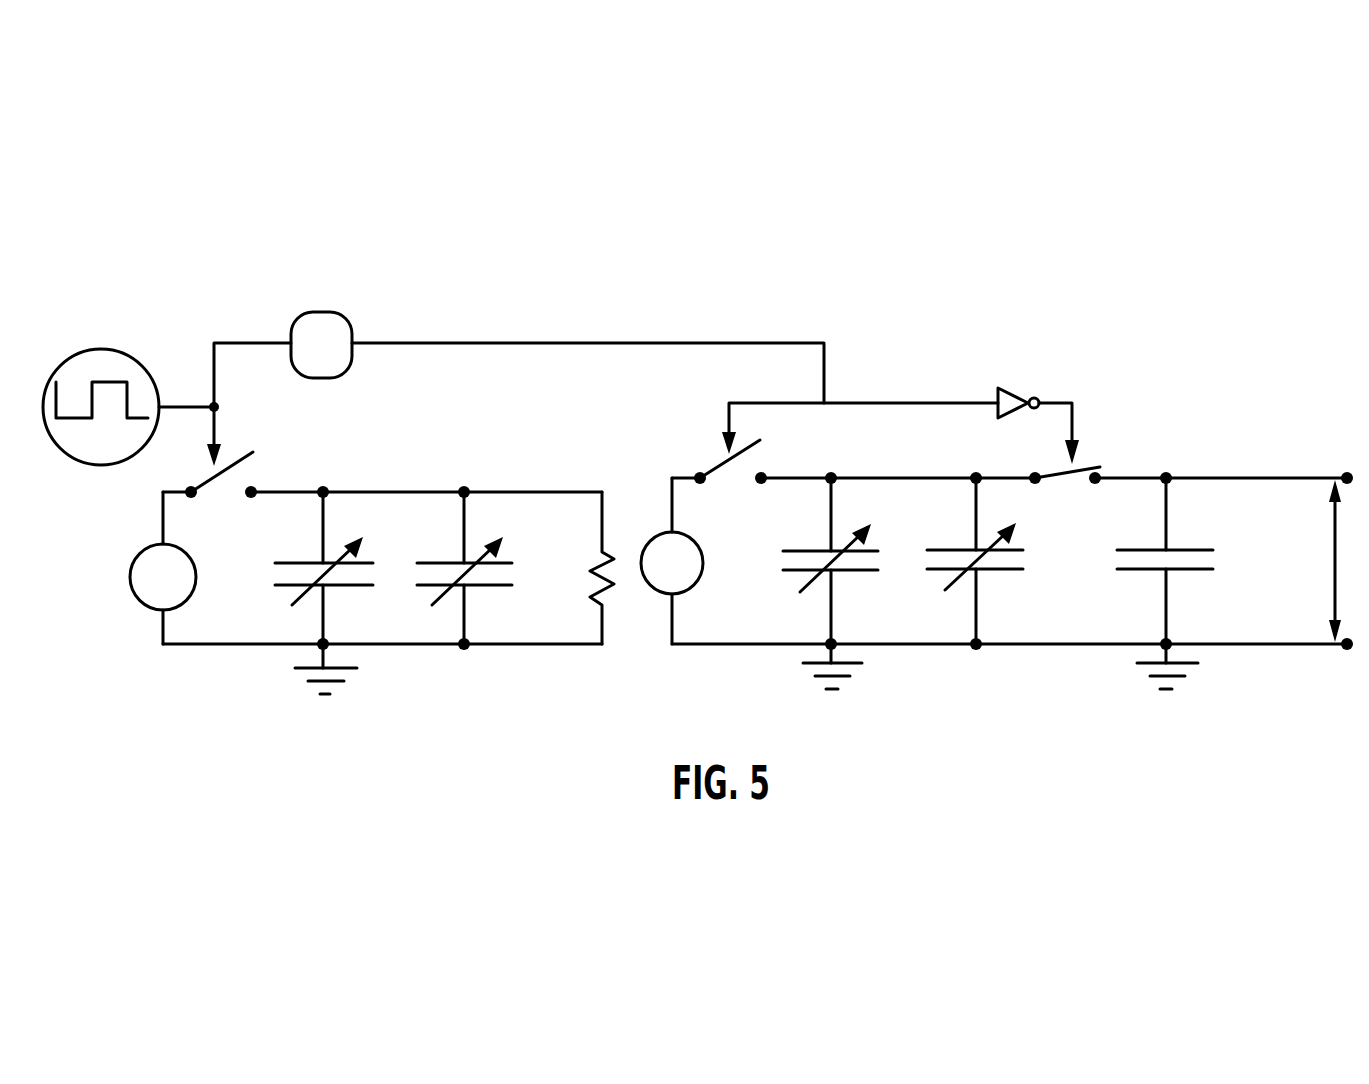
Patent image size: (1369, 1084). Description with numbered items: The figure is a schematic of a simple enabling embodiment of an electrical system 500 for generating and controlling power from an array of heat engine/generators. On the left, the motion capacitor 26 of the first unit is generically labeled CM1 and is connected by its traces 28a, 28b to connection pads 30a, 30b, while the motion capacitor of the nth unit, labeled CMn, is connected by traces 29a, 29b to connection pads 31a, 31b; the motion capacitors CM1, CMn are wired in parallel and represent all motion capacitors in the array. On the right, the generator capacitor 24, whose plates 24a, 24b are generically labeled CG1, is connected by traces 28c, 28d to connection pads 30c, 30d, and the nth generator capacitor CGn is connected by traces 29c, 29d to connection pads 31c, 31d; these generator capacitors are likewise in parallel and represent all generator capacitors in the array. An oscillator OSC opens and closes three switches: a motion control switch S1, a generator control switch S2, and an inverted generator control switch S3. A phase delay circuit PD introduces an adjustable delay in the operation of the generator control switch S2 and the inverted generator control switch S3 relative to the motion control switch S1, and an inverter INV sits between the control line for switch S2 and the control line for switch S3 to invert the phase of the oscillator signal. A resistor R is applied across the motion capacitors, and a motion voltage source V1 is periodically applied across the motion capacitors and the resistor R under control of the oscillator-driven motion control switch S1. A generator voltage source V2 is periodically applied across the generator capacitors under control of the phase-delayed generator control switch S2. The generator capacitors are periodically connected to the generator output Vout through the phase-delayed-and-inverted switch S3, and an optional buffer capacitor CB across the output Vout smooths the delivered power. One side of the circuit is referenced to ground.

The electrical system 500 is at (872, 285).
The generator capacitor 24 is at (784, 590).
The plate of generator capacitor 24a is at (786, 569).
The plate of generator capacitor 24b is at (786, 549).
The motion capacitor 26 is at (272, 600).
The trace 28a is at (325, 608).
The trace 28b is at (325, 525).
The trace 28c is at (833, 612).
The trace 28d is at (833, 506).
The trace 29a is at (466, 616).
The trace 29b is at (466, 520).
The trace 29c is at (978, 610).
The trace 29d is at (978, 510).
The connection pad 30a is at (320, 648).
The connection pad 30b is at (323, 490).
The connection pad 30c is at (828, 647).
The connection pad 30d is at (831, 476).
The connection pad 31a is at (464, 646).
The connection pad 31b is at (464, 490).
The connection pad 31c is at (976, 646).
The connection pad 31d is at (976, 476).
The oscillator OSC is at (128, 387).
The phase delay circuit PD is at (321, 345).
The inverter INV is at (1038, 407).
The motion control switch S1 is at (233, 469).
The generator control switch S2 is at (746, 461).
The inverted generator control switch S3 is at (1076, 461).
The motion voltage source V1 is at (163, 568).
The generator voltage source V2 is at (672, 561).
The resistor R is at (588, 568).
The buffer capacitor CB is at (1165, 580).
The motion capacitor CM1 is at (291, 545).
The motion capacitor CMn is at (437, 546).
The generator capacitor CG1 is at (804, 534).
The generator capacitor CGn is at (949, 534).
The generator output Vout is at (1340, 561).